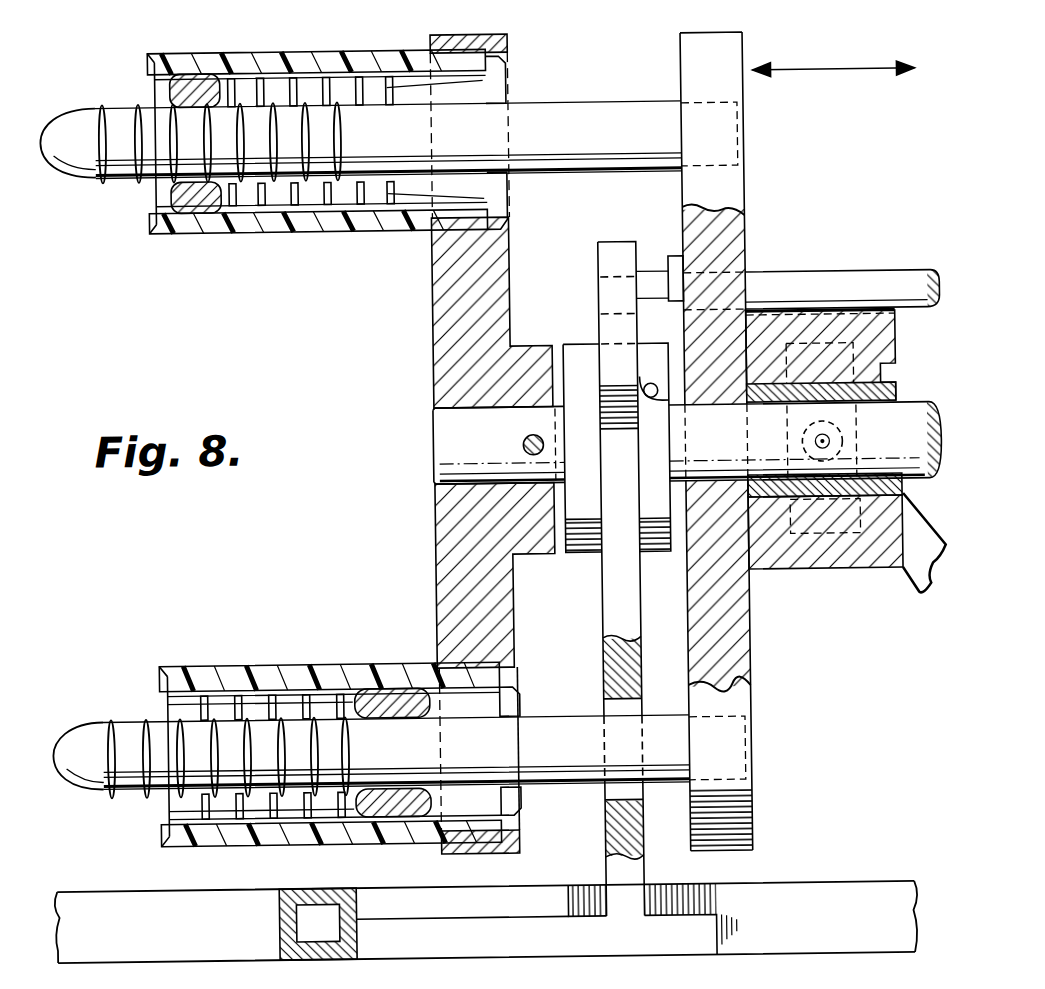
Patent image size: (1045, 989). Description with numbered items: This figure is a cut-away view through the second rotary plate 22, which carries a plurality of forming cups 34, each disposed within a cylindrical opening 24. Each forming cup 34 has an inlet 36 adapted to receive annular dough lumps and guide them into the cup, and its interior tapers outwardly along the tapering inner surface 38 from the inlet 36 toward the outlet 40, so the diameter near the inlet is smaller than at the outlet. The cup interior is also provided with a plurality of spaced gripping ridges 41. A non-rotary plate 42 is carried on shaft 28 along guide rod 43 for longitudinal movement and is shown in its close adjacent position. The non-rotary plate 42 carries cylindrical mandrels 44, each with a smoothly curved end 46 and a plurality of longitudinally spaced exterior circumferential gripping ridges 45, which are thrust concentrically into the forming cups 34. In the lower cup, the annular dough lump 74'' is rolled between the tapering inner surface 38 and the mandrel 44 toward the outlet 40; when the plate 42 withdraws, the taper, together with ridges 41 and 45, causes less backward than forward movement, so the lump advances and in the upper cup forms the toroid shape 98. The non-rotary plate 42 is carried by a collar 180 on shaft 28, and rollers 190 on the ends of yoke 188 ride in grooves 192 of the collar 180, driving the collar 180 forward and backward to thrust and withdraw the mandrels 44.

The second rotary plate 22 is at (468, 377).
The cylindrical opening 24 is at (490, 62).
The shaft 28 is at (432, 460).
The forming cup 34 is at (388, 232).
The inlet 36 is at (520, 703).
The tapering inner surface 38 is at (292, 210).
The outlet 40 is at (155, 200).
The gripping ridges 41 is at (385, 95).
The non-rotary plate 42 is at (728, 190).
The guide rod 43 is at (835, 290).
The cylindrical mandrel 44 is at (630, 125).
The exterior circumferential gripping ridges 45 is at (108, 100).
The smoothly curved end 46 is at (68, 125).
The annular dough lump 74'' is at (392, 706).
The toroid shape 98 is at (198, 210).
The collar 180 is at (785, 562).
The yoke 188 is at (913, 572).
The rollers 190 is at (840, 410).
The grooves 192 is at (803, 350).